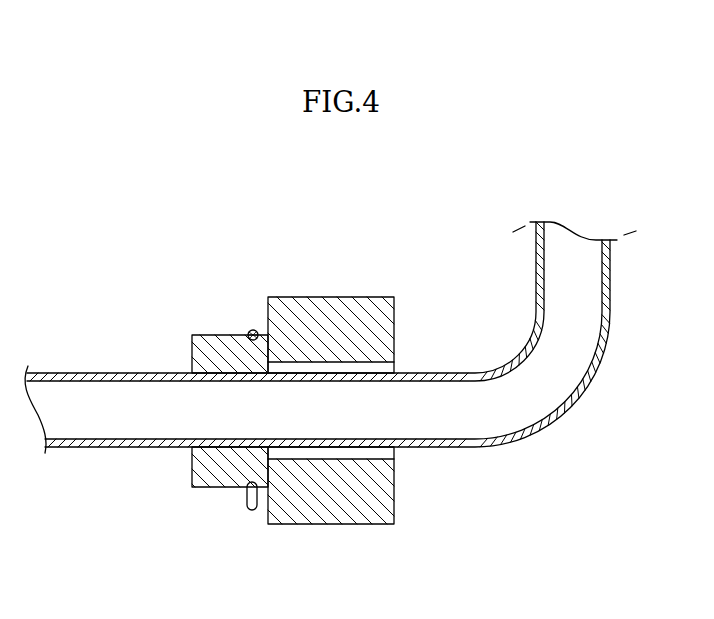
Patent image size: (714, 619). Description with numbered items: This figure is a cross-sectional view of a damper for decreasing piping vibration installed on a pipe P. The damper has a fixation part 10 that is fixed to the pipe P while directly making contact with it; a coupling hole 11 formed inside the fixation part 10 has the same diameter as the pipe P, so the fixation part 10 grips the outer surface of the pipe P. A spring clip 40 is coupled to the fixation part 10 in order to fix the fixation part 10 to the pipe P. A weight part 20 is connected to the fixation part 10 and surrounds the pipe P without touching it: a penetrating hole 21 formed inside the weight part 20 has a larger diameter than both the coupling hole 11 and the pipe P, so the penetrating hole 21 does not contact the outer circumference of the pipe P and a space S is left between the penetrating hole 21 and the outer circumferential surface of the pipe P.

The fixation part 10 is at (194, 392).
The coupling hole 11 is at (200, 392).
The weight part 20 is at (365, 387).
The penetrating hole 21 is at (311, 358).
The spring clip 40 is at (235, 515).
The space S is at (368, 371).
The pipe P is at (610, 283).